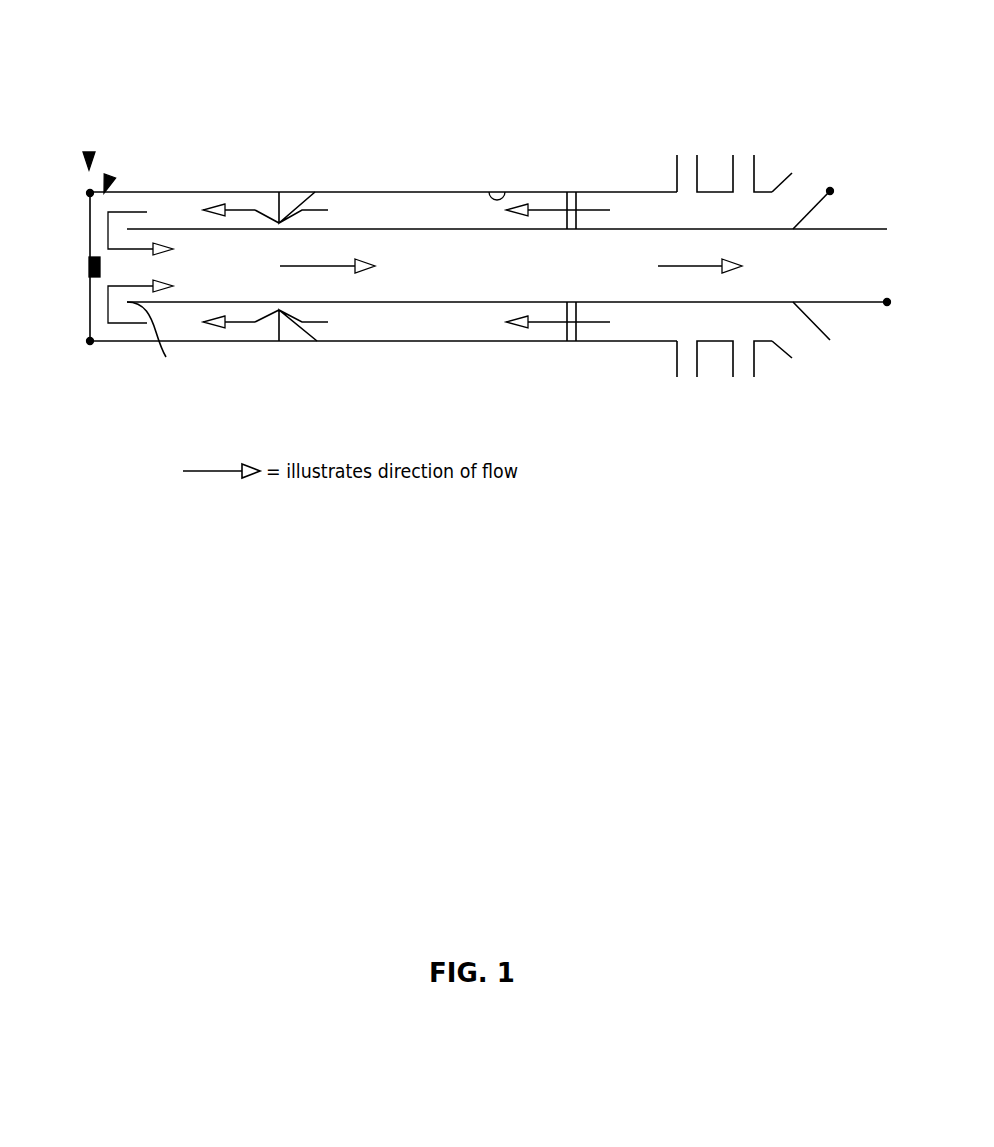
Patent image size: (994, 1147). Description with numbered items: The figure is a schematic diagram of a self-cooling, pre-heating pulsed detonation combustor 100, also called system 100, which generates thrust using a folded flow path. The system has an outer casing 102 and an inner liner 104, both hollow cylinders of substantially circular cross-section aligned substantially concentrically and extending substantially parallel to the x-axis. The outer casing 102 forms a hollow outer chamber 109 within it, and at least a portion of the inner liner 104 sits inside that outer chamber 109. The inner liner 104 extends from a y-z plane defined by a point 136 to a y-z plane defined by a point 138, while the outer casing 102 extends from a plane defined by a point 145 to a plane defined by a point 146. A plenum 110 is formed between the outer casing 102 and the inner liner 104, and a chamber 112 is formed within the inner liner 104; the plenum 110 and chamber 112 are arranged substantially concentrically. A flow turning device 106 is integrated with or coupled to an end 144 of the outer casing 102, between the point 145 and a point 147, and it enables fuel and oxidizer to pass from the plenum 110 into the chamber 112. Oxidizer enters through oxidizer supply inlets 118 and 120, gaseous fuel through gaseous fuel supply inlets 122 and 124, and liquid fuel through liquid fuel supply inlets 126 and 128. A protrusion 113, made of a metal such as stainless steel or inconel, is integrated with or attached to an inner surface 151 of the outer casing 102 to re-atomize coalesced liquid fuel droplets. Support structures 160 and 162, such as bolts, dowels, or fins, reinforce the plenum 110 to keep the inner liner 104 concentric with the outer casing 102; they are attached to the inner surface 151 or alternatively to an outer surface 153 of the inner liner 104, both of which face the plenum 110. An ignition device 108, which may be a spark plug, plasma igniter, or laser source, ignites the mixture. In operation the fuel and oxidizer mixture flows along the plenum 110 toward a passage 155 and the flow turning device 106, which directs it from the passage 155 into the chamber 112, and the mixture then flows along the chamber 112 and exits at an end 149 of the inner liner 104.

The pulsed detonation combustor 100 is at (203, 65).
The outer casing 102 is at (442, 192).
The inner liner 104 is at (355, 228).
The flow turning device 106 is at (89, 290).
The ignition device 108 is at (89, 265).
The outer chamber 109 is at (185, 198).
The plenum 110 is at (404, 322).
The chamber 112 is at (457, 283).
The protrusion 113 is at (288, 202).
The oxidizer supply inlet 118 is at (798, 330).
The oxidizer supply inlet 120 is at (800, 190).
The gaseous fuel supply inlet 122 is at (743, 367).
The gaseous fuel supply inlet 124 is at (743, 163).
The liquid fuel supply inlet 126 is at (687, 367).
The liquid fuel supply inlet 128 is at (687, 163).
The point 136 is at (154, 346).
The point 138 is at (887, 303).
The end 144 is at (89, 152).
The point 145 is at (90, 193).
The point 146 is at (830, 191).
The point 147 is at (90, 342).
The end 149 is at (877, 258).
The inner surface 151 is at (490, 187).
The outer surface 153 is at (393, 228).
The passage 155 is at (110, 176).
The support structure 160 is at (573, 190).
The support structure 162 is at (571, 335).